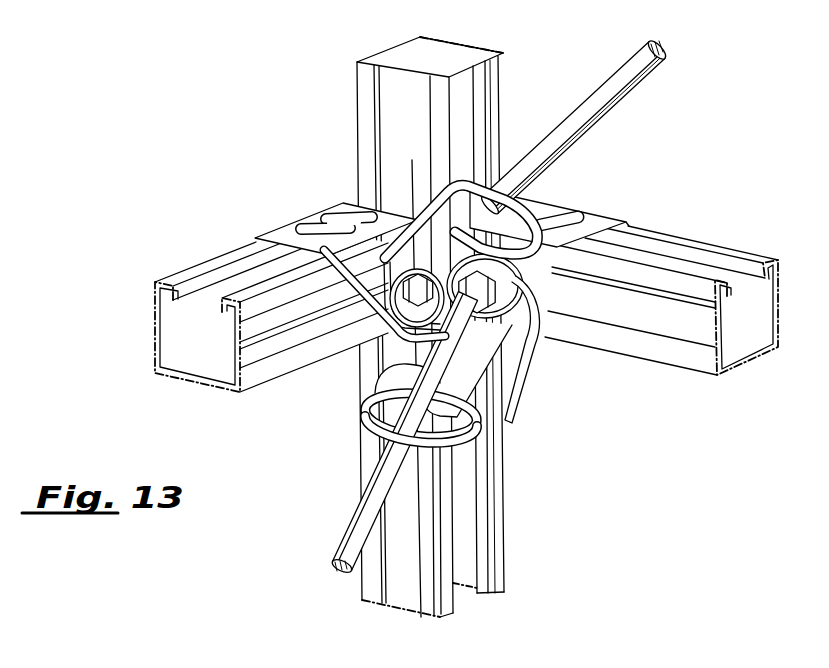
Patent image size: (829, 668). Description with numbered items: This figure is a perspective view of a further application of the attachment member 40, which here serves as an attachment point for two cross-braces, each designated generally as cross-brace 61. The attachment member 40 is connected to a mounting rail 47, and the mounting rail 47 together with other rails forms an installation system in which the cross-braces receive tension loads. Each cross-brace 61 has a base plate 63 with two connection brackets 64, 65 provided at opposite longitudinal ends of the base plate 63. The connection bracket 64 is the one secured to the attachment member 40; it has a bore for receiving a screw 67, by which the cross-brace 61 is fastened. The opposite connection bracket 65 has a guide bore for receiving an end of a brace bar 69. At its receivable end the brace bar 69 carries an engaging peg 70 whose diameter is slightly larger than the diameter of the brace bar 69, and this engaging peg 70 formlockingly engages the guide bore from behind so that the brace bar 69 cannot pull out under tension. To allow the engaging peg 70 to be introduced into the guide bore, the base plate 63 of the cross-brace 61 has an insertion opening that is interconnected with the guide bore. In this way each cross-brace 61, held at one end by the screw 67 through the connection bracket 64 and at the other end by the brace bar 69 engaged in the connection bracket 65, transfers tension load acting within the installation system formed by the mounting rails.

The attachment member 40 is at (288, 230).
The mounting rail 47 is at (363, 108).
The cross-brace 61 is at (520, 139).
The base plate 63 is at (467, 417).
The connection bracket 64 is at (523, 300).
The connection bracket 65 is at (476, 306).
The screw 67 is at (497, 279).
The brace bar 69 is at (623, 86).
The engaging peg 70 is at (375, 382).